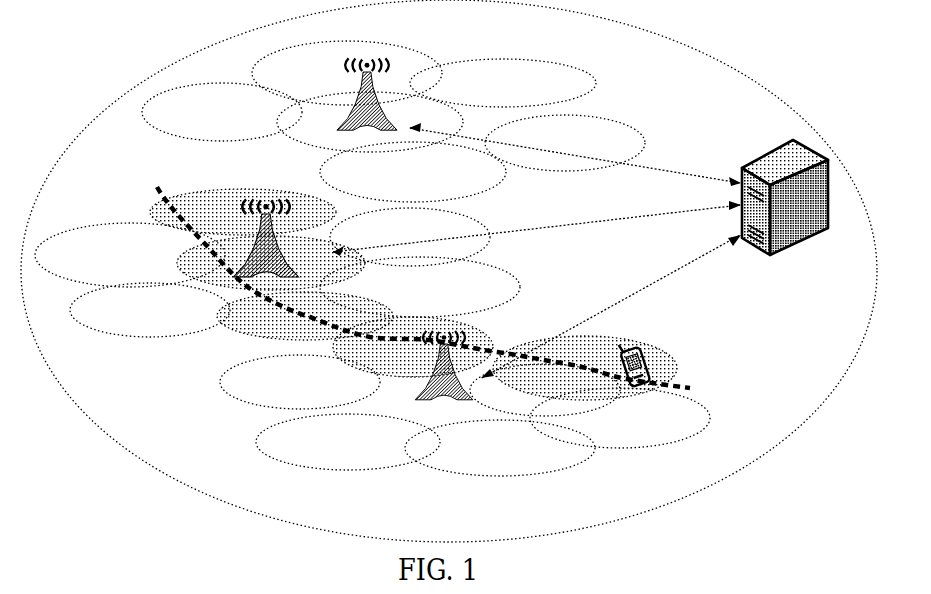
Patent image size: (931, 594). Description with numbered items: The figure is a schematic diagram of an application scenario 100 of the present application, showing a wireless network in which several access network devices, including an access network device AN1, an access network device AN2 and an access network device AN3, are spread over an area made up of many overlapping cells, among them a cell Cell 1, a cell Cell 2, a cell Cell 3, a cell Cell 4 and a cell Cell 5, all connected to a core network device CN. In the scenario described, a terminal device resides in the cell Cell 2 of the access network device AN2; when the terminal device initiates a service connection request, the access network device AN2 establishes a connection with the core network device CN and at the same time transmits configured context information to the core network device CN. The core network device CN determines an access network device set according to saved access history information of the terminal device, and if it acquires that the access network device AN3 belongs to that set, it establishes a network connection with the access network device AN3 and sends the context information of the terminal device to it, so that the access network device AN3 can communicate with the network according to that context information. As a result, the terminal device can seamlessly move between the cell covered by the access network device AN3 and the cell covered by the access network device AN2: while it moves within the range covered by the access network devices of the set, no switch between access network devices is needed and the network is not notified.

The wireless communication system 100 is at (64, 31).
The access node 1 AN1 is at (377, 104).
The access network device AN2 is at (282, 238).
The access network device AN3 is at (466, 371).
The core network device CN is at (785, 216).
The cell 1 Cell 1 is at (243, 212).
The cell Cell 2 is at (271, 263).
The cell 3 Cell 3 is at (305, 316).
The cell 4 Cell 4 is at (413, 347).
The cell 5 Cell 5 is at (585, 368).